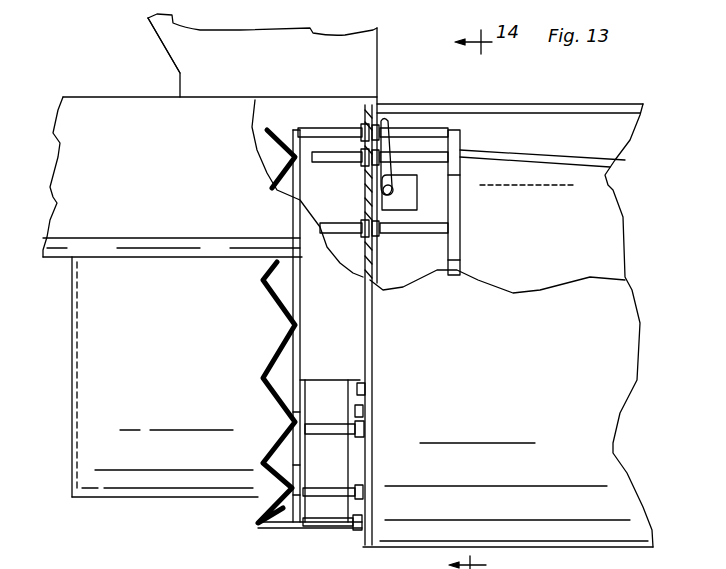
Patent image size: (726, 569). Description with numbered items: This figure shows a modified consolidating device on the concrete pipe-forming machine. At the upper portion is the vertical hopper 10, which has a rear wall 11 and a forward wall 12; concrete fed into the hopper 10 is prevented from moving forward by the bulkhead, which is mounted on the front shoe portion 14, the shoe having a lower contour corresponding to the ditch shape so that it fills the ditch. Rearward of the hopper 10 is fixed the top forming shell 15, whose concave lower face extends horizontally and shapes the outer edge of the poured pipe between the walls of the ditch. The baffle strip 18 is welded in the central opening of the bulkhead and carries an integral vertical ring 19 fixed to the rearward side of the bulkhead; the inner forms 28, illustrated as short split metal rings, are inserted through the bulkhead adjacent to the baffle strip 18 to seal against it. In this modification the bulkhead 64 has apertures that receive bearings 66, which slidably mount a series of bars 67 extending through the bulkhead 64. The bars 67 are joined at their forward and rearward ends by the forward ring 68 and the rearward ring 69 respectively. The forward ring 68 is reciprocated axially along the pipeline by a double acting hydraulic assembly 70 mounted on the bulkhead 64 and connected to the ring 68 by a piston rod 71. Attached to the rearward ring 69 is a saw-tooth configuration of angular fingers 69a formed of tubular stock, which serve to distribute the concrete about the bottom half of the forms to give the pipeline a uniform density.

The vertical hopper 10 is at (272, 69).
The rear wall 11 is at (165, 50).
The forward wall 12 is at (378, 62).
The front shoe portion 14 is at (499, 365).
The top forming shell 15 is at (157, 149).
The baffle strip 18 is at (352, 413).
The vertical ring 19 is at (355, 392).
The forms 28 is at (168, 348).
The modified bulkhead 64 is at (363, 537).
The bearings 66 is at (363, 123).
The bars 67 is at (330, 158).
The forward ring 68 is at (462, 188).
The rearward ring 69 is at (305, 130).
The angular fingers 69a is at (274, 300).
The double acting hydraulic assembly 70 is at (410, 207).
The piston rod 71 is at (437, 172).